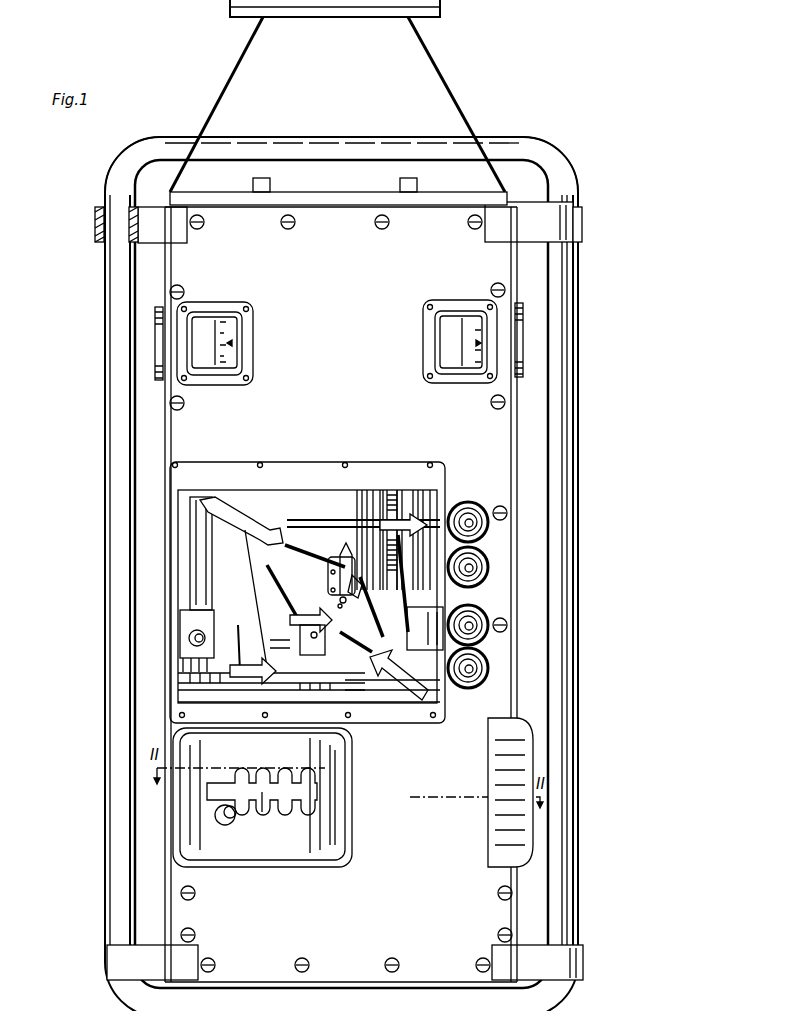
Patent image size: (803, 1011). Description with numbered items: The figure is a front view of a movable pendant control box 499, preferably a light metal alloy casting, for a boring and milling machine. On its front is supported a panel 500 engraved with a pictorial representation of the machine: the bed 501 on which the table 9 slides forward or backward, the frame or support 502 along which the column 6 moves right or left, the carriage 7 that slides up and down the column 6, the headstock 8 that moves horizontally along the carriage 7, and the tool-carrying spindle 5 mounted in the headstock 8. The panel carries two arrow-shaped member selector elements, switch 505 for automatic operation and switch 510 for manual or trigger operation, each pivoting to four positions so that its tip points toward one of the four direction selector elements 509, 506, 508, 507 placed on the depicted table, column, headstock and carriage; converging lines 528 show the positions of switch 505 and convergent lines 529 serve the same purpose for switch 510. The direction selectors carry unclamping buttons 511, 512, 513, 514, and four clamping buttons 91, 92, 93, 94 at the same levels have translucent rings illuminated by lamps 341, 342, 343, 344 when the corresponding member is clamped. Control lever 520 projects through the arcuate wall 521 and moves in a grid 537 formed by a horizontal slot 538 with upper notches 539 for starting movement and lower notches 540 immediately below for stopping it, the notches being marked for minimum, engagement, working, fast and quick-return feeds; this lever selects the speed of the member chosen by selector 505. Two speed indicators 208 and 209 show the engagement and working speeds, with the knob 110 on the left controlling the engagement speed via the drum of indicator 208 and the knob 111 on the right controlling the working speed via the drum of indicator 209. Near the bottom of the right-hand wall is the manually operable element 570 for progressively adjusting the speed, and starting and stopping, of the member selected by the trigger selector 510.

The knob 110 is at (158, 355).
The knob 111 is at (521, 332).
The speed indicator 208 is at (230, 337).
The speed indicator 209 is at (447, 329).
The panel 500 is at (320, 504).
The member selector element 505 is at (248, 521).
The direction selector element 506 is at (428, 523).
The unclamping button 511 is at (395, 505).
The unclamping button 514 is at (252, 685).
The table 9 is at (215, 680).
The direction selector element 509 is at (237, 643).
The column 6 is at (366, 500).
The converging lines 528 is at (296, 546).
The direction selector element 507 is at (352, 566).
The unclamping button 512 is at (360, 585).
The headstock 8 is at (320, 592).
The carriage 7 is at (332, 588).
The convergent lines 529 is at (406, 588).
The direction selector element 508 is at (300, 624).
The unclamping button 513 is at (316, 629).
The tool-carrying spindle 5 is at (285, 650).
The member selector element 510 is at (418, 687).
The frame or support 502 is at (343, 722).
The bed 501 is at (370, 697).
The clamping button 91 is at (474, 516).
The clamping button 92 is at (478, 566).
The clamping button 93 is at (480, 617).
The clamping button 94 is at (480, 664).
The lamp 341 is at (480, 535).
The lamp 342 is at (487, 565).
The lamp 343 is at (488, 615).
The lamp 344 is at (487, 670).
The box 499 is at (540, 600).
The wall 521 is at (352, 800).
The notches 539 is at (253, 770).
The grid 537 is at (318, 790).
The horizontal slot 538 is at (285, 810).
The control lever 520 is at (238, 822).
The notches 540 is at (263, 815).
The manually operable element 570 is at (533, 812).